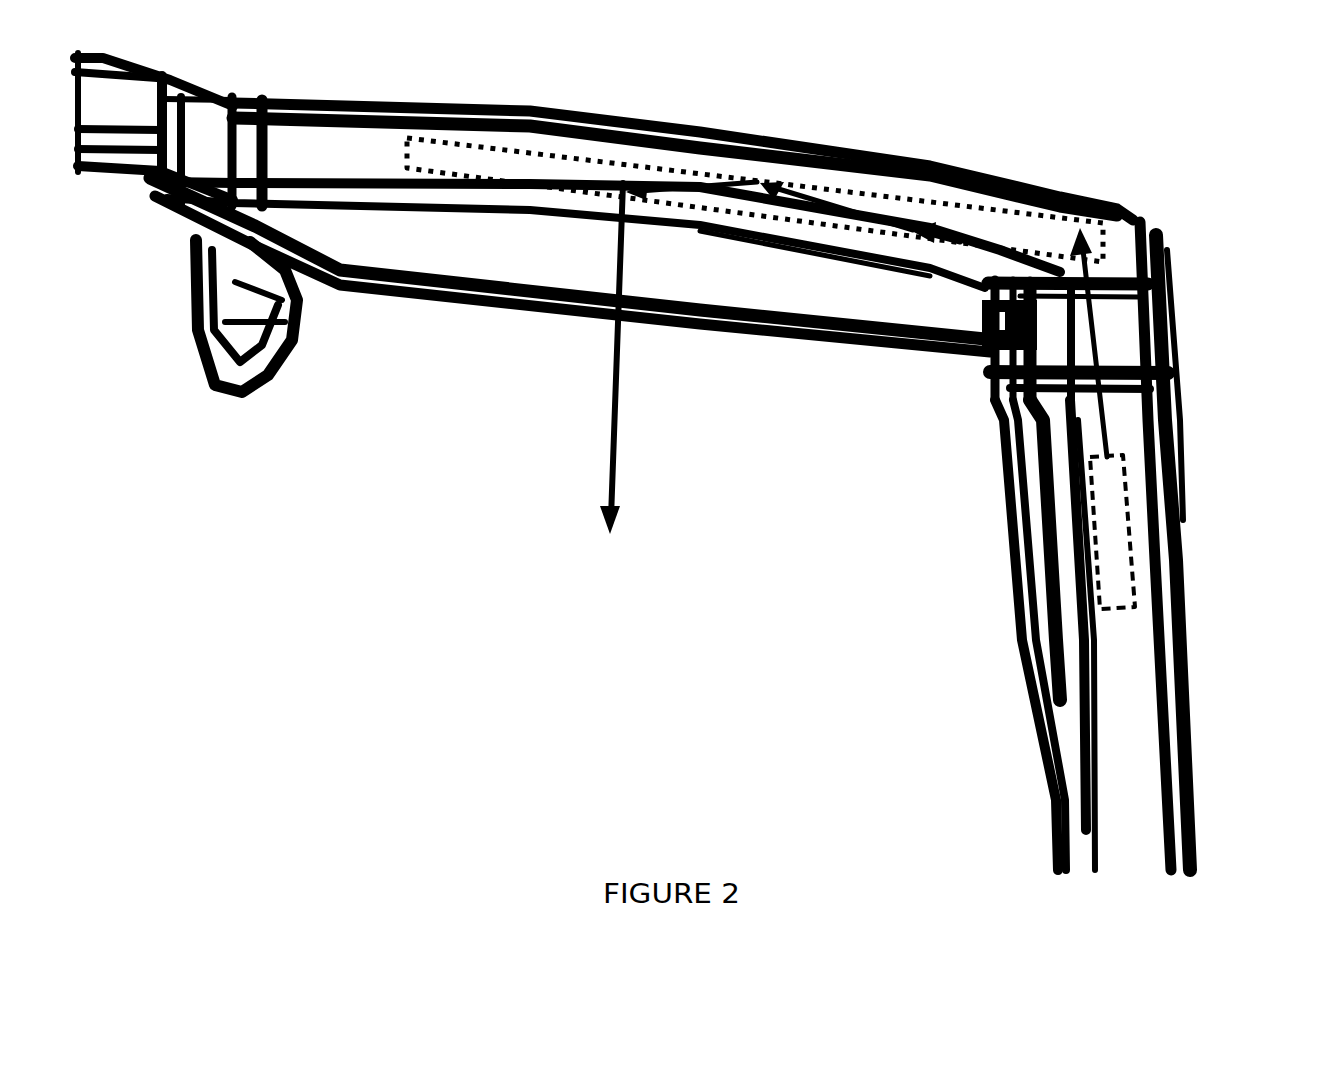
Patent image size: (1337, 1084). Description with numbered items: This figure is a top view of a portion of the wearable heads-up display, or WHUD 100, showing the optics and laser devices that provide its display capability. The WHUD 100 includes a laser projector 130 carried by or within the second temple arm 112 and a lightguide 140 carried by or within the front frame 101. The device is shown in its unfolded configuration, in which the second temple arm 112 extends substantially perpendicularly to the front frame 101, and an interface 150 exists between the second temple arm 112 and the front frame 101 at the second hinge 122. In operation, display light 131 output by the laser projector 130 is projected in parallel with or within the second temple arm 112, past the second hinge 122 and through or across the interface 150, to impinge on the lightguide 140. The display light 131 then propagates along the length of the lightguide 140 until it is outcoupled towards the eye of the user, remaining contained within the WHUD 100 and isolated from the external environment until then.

The WHUD 100 is at (685, 446).
The front frame 101 is at (337, 137).
The lightguide 140 is at (557, 167).
The interface 150 is at (1183, 268).
The display light 131 is at (610, 398).
The second hinge 122 is at (980, 348).
The laser projector 130 is at (1120, 582).
The second temple arm 112 is at (1130, 813).